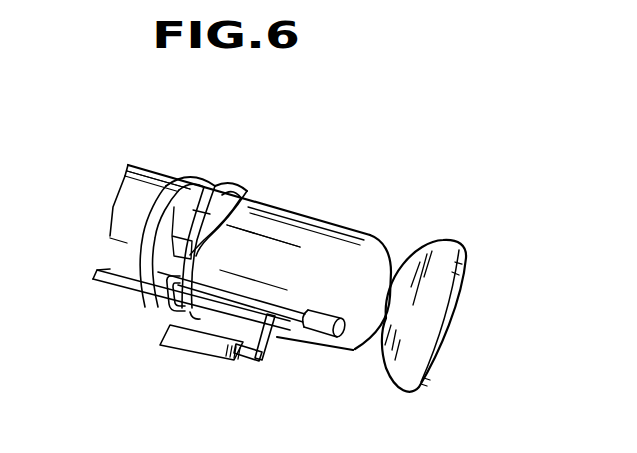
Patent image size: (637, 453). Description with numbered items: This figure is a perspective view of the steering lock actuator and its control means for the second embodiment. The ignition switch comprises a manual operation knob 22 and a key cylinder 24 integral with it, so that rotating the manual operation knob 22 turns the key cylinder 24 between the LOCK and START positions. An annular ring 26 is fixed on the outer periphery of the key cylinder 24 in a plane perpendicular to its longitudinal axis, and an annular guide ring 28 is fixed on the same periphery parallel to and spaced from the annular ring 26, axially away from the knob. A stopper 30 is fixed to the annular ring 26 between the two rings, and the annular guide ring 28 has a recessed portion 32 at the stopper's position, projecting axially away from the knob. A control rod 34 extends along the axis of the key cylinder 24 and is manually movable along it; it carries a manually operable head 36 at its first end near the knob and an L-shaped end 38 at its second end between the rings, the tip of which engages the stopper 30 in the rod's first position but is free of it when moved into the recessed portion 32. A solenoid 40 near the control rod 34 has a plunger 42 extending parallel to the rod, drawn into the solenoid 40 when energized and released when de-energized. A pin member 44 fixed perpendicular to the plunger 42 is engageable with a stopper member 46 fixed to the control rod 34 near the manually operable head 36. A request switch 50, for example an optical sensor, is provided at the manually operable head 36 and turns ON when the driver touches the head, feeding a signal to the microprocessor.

The manual operation knob 22 is at (433, 297).
The key cylinder 24 is at (343, 231).
The annular ring 26 is at (238, 191).
The annular guide ring 28 is at (110, 272).
The stopper 30 is at (125, 191).
The recessed portion 32 is at (143, 224).
The control rod 34 is at (255, 303).
The manually operable head 36 is at (323, 313).
The L-shaped end 38 is at (178, 311).
The solenoid 40 is at (177, 343).
The plunger 42 is at (245, 362).
The pin member 44 is at (273, 343).
The stopper member 46 is at (293, 336).
The request switch 50 is at (350, 357).